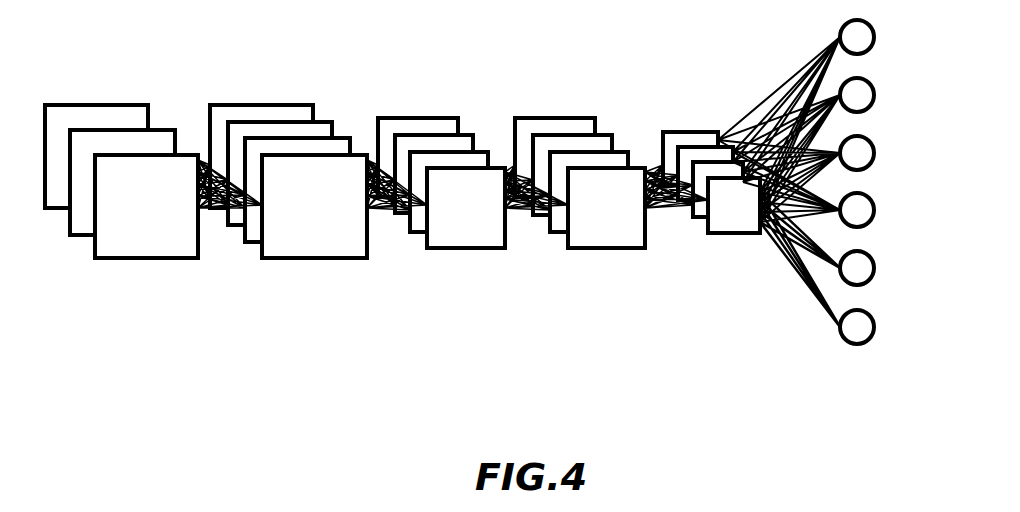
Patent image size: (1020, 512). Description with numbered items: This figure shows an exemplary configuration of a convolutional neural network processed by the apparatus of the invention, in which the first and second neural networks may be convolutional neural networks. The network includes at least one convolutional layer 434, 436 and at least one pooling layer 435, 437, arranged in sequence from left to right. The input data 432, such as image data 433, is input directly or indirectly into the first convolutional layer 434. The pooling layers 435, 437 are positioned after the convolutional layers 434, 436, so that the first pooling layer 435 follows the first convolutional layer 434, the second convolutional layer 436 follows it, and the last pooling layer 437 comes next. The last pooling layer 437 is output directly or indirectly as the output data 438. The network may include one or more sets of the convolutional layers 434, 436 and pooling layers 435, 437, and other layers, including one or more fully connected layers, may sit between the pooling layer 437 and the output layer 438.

The input data 432 is at (121, 205).
The image data 433 is at (146, 206).
The first convolutional layer 434 is at (288, 205).
The pooling layer 435 is at (441, 206).
The convolutional layer 436 is at (580, 204).
The last pooling layer 437 is at (713, 206).
The output data 438 is at (800, 212).